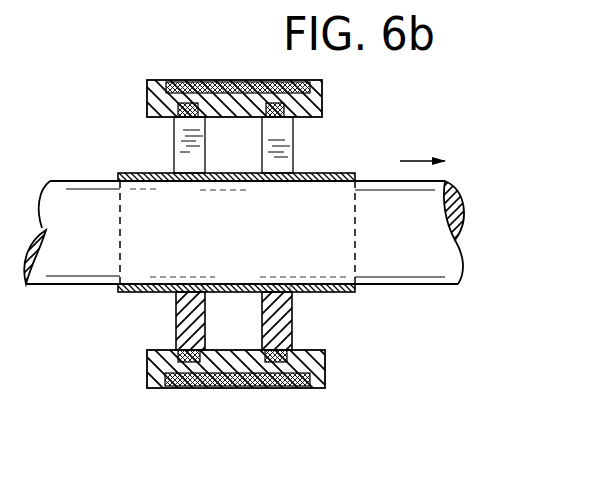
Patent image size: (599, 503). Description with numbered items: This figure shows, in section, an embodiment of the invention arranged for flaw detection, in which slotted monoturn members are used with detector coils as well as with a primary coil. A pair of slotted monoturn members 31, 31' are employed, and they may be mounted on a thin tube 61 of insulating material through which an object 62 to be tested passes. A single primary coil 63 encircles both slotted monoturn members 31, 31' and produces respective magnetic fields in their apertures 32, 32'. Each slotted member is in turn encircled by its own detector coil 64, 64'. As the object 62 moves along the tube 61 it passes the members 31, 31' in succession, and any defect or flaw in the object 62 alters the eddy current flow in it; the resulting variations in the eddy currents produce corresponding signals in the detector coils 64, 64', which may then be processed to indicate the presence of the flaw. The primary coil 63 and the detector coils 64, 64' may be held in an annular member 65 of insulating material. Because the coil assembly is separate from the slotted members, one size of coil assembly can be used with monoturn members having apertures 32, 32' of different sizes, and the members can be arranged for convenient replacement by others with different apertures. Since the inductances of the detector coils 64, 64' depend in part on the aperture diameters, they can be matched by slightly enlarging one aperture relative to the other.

The object 62 is at (84, 192).
The thin tube 61 is at (166, 178).
The primary coil 63 is at (231, 80).
The annular member 65 is at (147, 96).
The detector coil 64 is at (150, 232).
The detector coil 64' is at (315, 232).
The slotted monoturn member 31 is at (162, 321).
The slotted monoturn member 31' is at (304, 321).
The aperture 32 is at (191, 266).
The aperture 32' is at (279, 266).